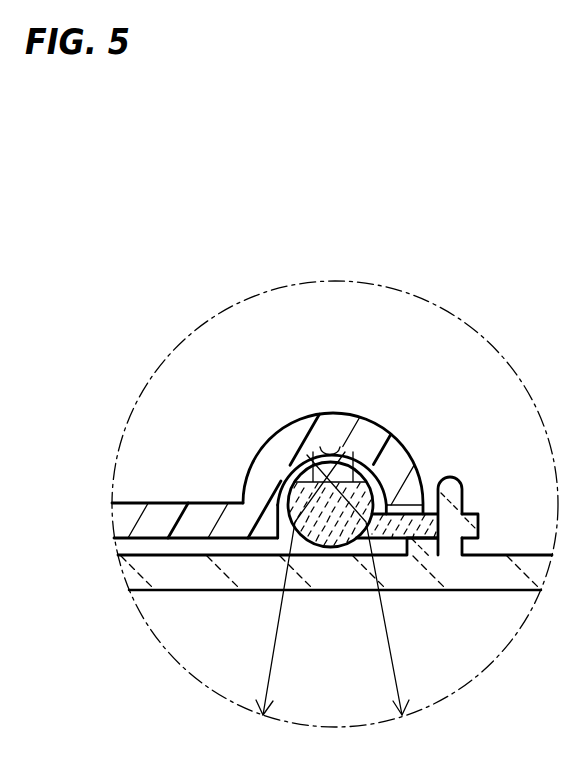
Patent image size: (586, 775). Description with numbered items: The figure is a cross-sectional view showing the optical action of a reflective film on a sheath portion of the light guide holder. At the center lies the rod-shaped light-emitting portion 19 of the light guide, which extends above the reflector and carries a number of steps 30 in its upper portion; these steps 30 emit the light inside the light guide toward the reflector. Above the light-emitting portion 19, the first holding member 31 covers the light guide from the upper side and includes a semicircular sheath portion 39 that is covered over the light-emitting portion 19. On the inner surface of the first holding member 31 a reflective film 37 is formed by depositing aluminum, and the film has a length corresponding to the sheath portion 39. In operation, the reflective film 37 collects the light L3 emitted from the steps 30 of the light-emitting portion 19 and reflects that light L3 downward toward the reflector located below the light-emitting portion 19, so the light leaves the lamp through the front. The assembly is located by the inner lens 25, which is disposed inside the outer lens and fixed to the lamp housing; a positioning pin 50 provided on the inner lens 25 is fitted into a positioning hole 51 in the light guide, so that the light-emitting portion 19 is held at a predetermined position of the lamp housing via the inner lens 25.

The light-emitting portion 19 is at (331, 528).
The inner lens 25 is at (210, 574).
The steps 30 is at (297, 457).
The first holding member 31 is at (181, 502).
The reflective film 37 is at (343, 450).
The sheath portion 39 is at (363, 435).
The positioning pin 50 is at (452, 488).
The positioning hole 51 is at (453, 529).
The light L3 is at (376, 472).